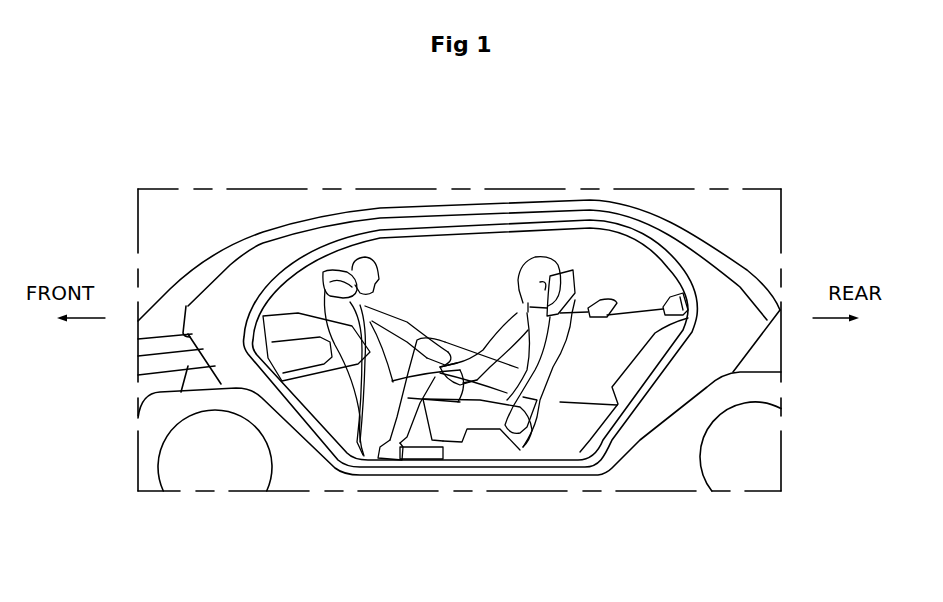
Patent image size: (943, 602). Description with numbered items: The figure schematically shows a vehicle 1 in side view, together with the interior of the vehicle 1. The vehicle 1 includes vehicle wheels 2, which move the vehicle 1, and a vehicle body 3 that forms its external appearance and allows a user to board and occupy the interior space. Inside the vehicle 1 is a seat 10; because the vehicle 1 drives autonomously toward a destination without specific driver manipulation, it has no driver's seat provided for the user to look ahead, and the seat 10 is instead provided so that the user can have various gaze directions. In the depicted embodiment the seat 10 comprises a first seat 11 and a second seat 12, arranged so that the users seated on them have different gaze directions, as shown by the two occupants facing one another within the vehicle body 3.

The vehicle 1 is at (326, 214).
The vehicle wheels 2 is at (757, 484).
The vehicle body 3 is at (717, 249).
The seat 10 is at (360, 545).
The first seat 11 is at (372, 413).
The second seat 12 is at (497, 452).